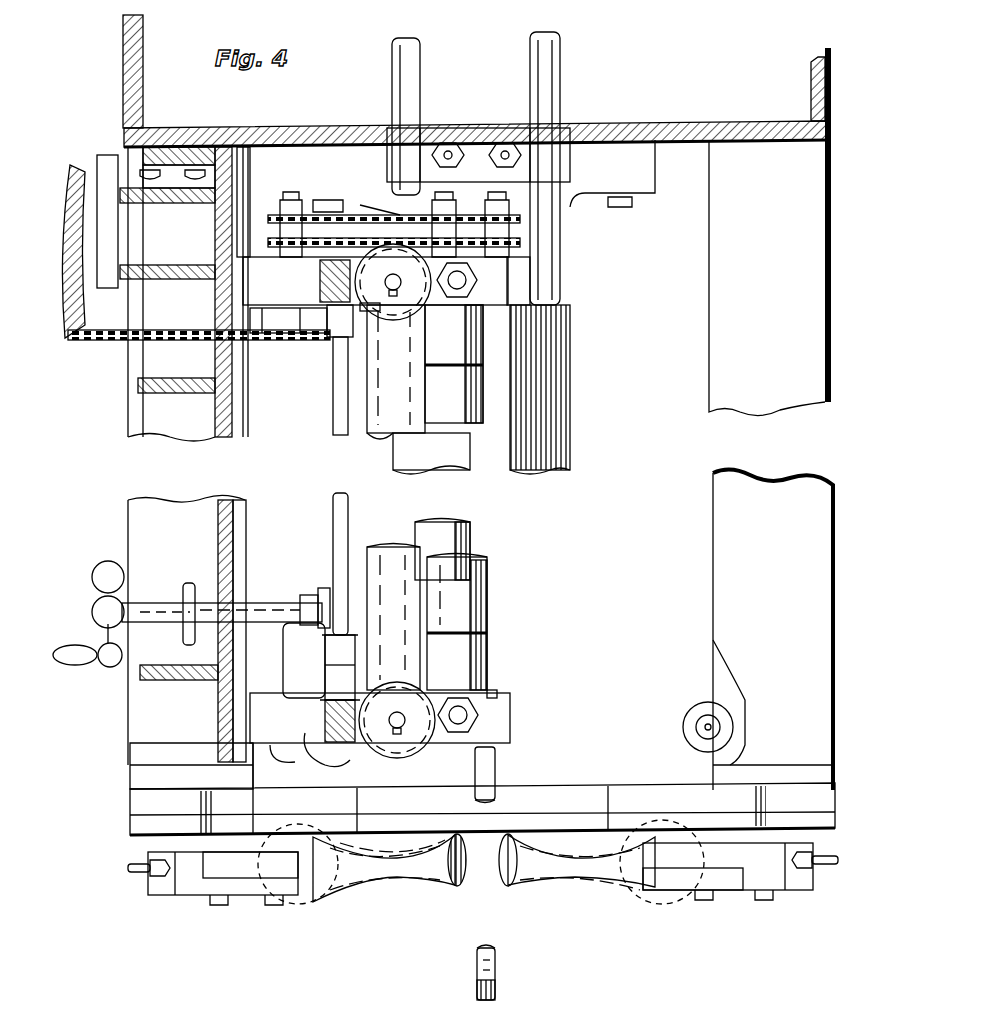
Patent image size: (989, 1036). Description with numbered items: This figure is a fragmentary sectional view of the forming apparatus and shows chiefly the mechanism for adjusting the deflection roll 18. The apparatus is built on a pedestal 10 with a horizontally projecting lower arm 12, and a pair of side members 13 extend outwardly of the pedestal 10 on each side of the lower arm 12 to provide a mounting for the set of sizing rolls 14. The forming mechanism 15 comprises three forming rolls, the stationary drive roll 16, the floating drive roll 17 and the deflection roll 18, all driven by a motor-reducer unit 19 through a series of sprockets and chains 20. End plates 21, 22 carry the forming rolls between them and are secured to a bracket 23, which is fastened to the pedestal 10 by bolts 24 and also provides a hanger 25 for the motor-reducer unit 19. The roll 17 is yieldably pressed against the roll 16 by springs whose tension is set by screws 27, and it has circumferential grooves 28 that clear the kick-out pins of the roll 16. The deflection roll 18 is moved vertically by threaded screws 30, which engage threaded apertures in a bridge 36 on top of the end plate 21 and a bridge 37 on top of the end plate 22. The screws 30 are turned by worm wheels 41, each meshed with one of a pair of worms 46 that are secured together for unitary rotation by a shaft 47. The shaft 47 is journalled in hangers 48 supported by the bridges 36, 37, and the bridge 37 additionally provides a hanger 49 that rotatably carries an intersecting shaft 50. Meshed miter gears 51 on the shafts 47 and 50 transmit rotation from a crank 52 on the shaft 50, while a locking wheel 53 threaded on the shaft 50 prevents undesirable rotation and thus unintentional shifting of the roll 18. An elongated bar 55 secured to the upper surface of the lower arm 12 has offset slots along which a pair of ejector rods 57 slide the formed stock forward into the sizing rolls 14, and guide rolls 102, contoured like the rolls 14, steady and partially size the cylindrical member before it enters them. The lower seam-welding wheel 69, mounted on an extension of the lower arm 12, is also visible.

The pedestal 10 is at (690, 150).
The lower arm 12 is at (537, 478).
The side members 13 is at (740, 348).
The sizing rolls 14 is at (360, 905).
The forming mechanism 15 is at (500, 607).
The stationary drive roll 16 is at (445, 542).
The floating drive roll 17 is at (470, 592).
The deflection roll 18 is at (392, 557).
The motor-reducer unit 19 is at (82, 185).
The sprockets and chains 20 is at (148, 332).
The end plate 21 is at (520, 285).
The end plate 22 is at (510, 715).
The bracket 23 is at (218, 520).
The bolts 24 is at (178, 165).
The hanger 25 is at (160, 270).
The screws 27 is at (465, 292).
The circumferential grooves 28 is at (483, 367).
The threaded screw 30 is at (398, 285).
The bridge 36 is at (263, 270).
The bridge 37 is at (310, 735).
The worm wheels 41 is at (385, 320).
The worms 46 is at (320, 293).
The shaft 47 is at (333, 513).
The hangers 48 is at (330, 337).
The hanger 49 is at (280, 648).
The intersecting shaft 50 is at (147, 603).
The miter gears 51 is at (312, 617).
The crank 52 is at (75, 668).
The locking wheel 53 is at (190, 583).
The elongated bar 55 is at (500, 472).
The ejector rods 57 is at (420, 82).
The lower seam-welding wheel 69 is at (477, 964).
The guide rolls 102 is at (690, 712).